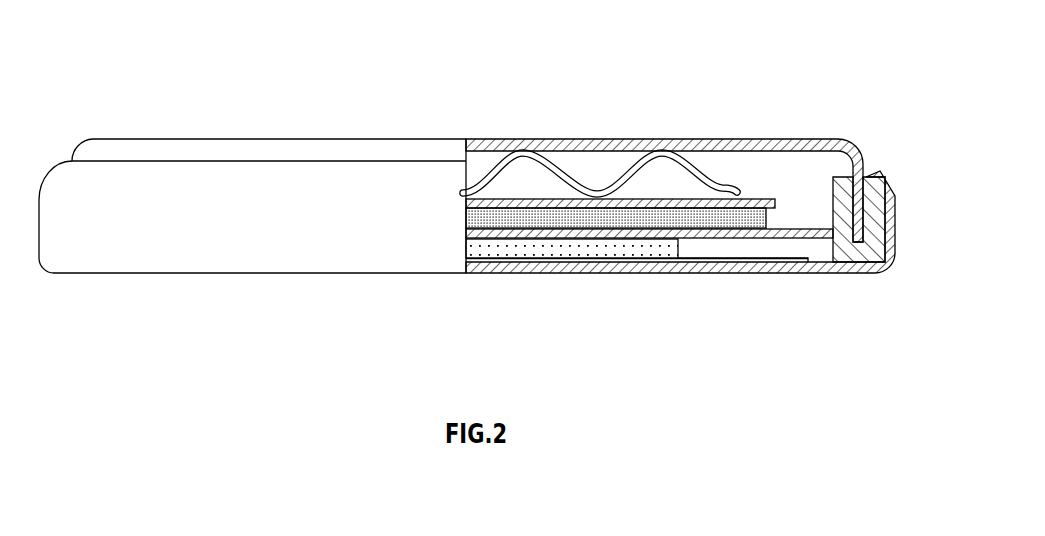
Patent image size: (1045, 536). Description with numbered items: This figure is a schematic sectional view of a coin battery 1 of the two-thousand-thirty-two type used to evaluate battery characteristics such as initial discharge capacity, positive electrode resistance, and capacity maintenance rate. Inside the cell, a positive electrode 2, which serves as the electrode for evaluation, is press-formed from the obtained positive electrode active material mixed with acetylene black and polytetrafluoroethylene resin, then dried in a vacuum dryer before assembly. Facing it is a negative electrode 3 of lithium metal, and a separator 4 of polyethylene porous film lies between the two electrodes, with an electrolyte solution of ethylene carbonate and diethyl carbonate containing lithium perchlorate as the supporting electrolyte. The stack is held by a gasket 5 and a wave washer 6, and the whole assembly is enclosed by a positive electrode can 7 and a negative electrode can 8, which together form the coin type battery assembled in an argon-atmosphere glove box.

The coin battery 1 is at (221, 88).
The positive electrode 2 is at (627, 273).
The negative electrode 3 is at (767, 218).
The separator 4 is at (802, 233).
The gasket 5 is at (880, 224).
The wave washer 6 is at (577, 173).
The positive electrode can 7 is at (517, 273).
The negative electrode can 8 is at (491, 139).